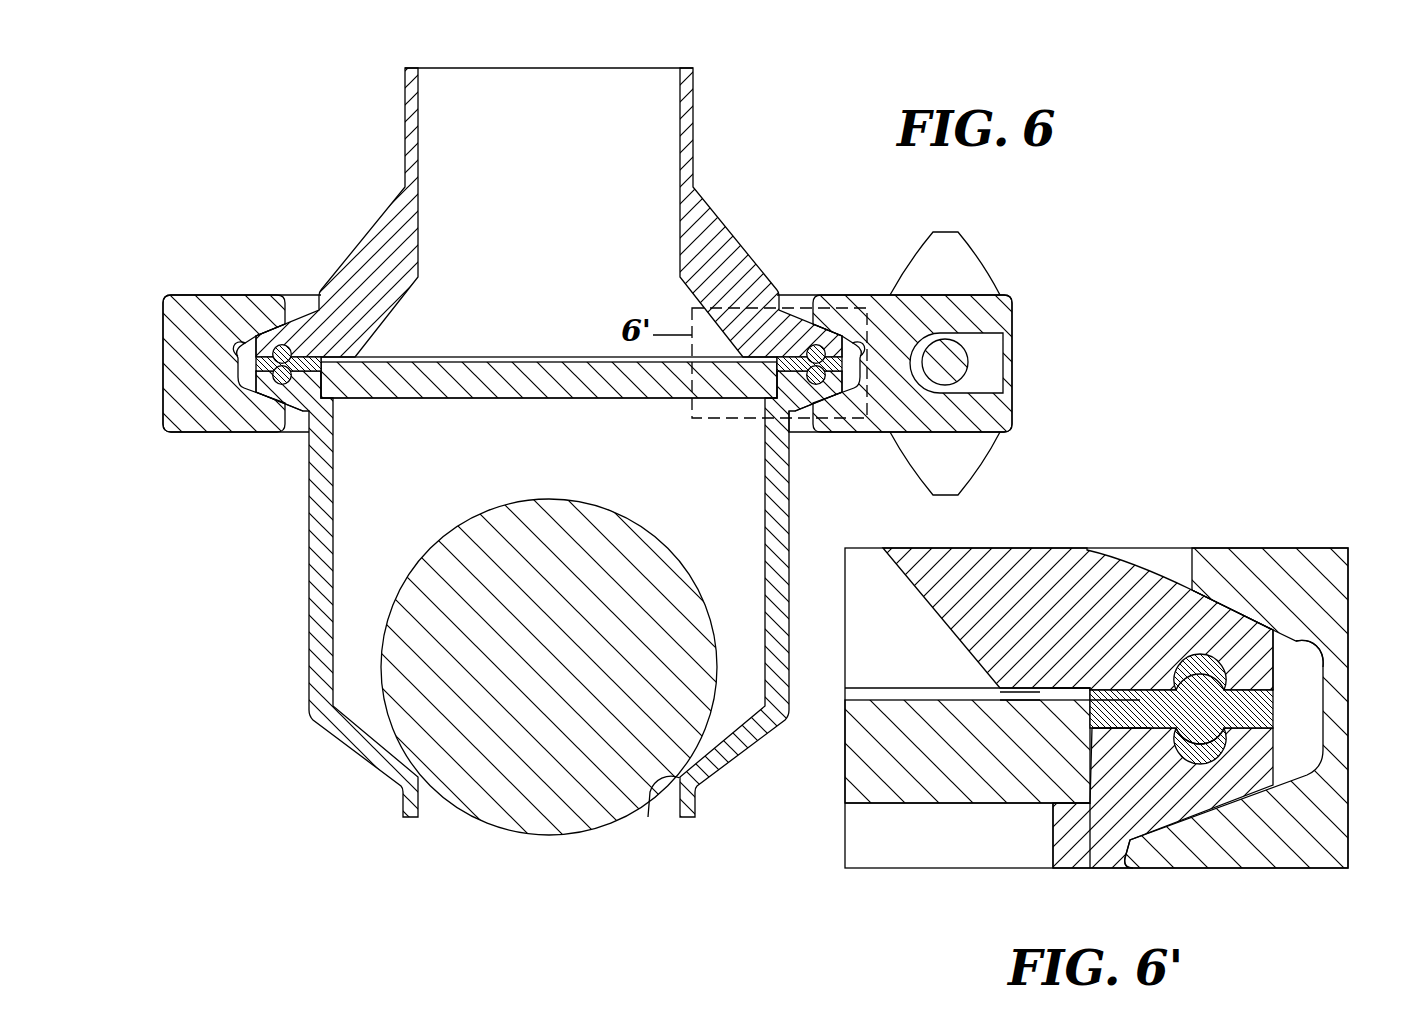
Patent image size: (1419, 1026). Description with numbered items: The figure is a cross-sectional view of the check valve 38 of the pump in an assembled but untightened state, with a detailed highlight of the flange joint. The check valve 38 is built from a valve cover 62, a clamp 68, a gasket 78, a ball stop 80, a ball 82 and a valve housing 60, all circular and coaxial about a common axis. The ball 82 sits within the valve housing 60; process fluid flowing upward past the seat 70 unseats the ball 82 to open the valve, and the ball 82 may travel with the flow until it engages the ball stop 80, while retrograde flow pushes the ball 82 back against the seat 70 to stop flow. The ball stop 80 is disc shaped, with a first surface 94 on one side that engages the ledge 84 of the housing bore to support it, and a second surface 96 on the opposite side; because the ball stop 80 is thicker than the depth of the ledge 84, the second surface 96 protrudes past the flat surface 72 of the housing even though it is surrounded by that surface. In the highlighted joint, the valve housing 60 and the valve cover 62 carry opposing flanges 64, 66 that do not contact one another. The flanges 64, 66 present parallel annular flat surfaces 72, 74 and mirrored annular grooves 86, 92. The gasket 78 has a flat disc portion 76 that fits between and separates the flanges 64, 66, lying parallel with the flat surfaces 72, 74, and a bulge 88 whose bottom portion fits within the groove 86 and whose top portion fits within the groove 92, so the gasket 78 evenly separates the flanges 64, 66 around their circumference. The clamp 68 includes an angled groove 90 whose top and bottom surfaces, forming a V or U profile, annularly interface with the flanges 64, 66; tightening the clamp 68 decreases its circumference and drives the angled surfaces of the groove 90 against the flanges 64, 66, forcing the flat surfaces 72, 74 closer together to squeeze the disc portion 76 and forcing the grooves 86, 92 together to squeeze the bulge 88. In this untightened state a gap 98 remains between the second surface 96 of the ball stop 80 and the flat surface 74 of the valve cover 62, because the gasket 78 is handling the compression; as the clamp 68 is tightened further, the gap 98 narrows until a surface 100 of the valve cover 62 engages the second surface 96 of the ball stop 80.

In FIG. 6, the check valve 38 is at (193, 471).
In FIG. 6, the valve housing 60 is at (308, 648).
In FIG. 6', the valve housing 60 is at (1078, 619).
In FIG. 6, the valve cover 62 is at (694, 137).
In FIG. 6, the flange 64 is at (303, 408).
In FIG. 6', the flange 64 is at (1254, 778).
In FIG. 6, the flange 66 is at (309, 300).
In FIG. 6', the flange 66 is at (1254, 633).
In FIG. 6, the clamp 68 is at (201, 295).
In FIG. 6', the clamp 68 is at (1236, 708).
In FIG. 6, the seat 70 is at (662, 790).
In FIG. 6', the flat surface 72 is at (1128, 720).
In FIG. 6', the flat surface 74 is at (1158, 690).
In FIG. 6', the disc portion 76 is at (1113, 700).
In FIG. 6, the gasket 78 is at (263, 398).
In FIG. 6', the gasket 78 is at (1273, 711).
In FIG. 6', the ball stop 80 is at (912, 805).
In FIG. 6, the ball 82 is at (549, 667).
In FIG. 6', the ledge 84 is at (1070, 806).
In FIG. 6', the groove 86 is at (1204, 760).
In FIG. 6, the bulge 88 is at (284, 345).
In FIG. 6', the bulge 88 is at (1207, 746).
In FIG. 6, the angled groove 90 is at (238, 352).
In FIG. 6', the angled groove 90 is at (1323, 667).
In FIG. 6', the groove 92 is at (1203, 657).
In FIG. 6', the first surface 94 is at (1080, 804).
In FIG. 6', the second surface 96 is at (1017, 700).
In FIG. 6', the gap 98 is at (1070, 690).
In FIG. 6', the surface 100 is at (1020, 692).